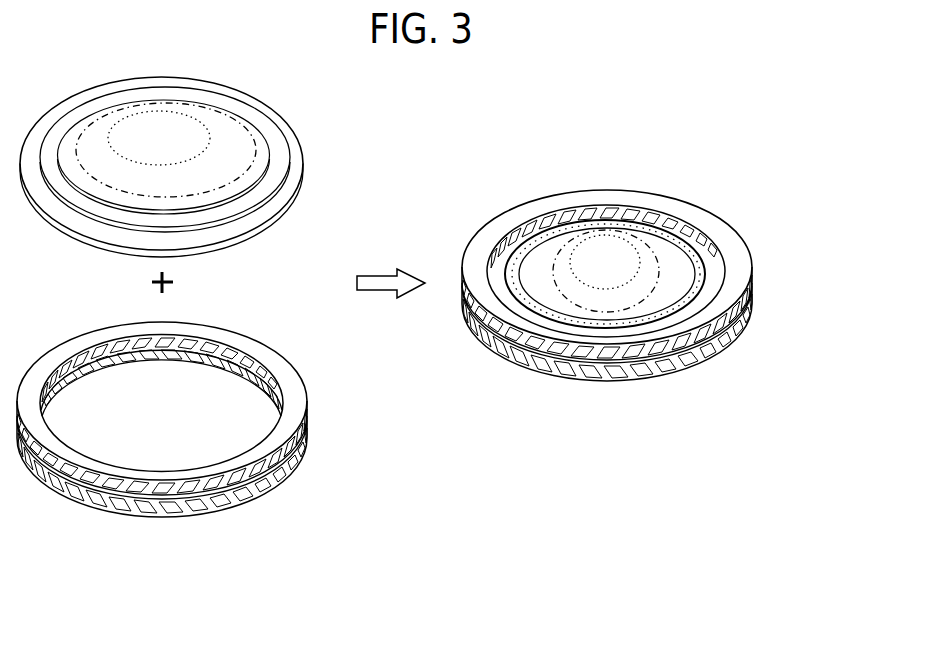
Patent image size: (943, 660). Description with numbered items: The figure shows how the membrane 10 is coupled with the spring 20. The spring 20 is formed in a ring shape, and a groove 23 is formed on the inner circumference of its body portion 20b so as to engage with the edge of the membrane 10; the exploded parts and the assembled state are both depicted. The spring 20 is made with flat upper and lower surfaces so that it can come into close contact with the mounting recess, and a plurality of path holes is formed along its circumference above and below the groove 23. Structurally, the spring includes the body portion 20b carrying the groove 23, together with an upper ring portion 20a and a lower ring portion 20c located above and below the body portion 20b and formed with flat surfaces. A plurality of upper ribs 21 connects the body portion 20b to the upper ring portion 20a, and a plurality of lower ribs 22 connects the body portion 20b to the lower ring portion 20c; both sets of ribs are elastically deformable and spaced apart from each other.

The membrane 10 is at (233, 129).
The spring 20 is at (221, 318).
The upper ring portion 20a is at (242, 472).
The body portion 20b is at (306, 440).
The lower ring portion 20c is at (270, 488).
The upper ribs 21 is at (174, 497).
The lower ribs 22 is at (207, 511).
The groove 23 is at (167, 348).